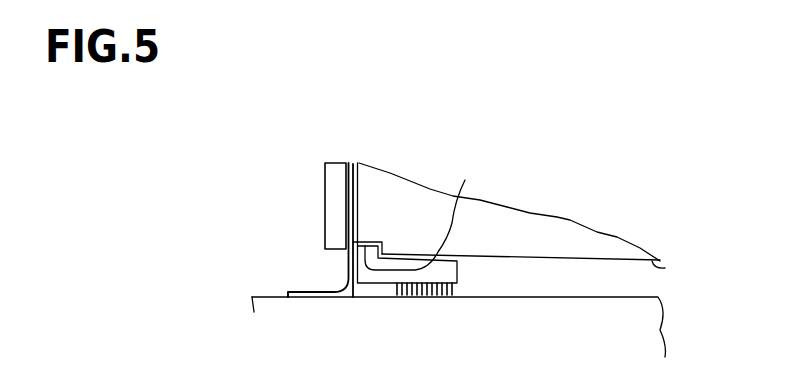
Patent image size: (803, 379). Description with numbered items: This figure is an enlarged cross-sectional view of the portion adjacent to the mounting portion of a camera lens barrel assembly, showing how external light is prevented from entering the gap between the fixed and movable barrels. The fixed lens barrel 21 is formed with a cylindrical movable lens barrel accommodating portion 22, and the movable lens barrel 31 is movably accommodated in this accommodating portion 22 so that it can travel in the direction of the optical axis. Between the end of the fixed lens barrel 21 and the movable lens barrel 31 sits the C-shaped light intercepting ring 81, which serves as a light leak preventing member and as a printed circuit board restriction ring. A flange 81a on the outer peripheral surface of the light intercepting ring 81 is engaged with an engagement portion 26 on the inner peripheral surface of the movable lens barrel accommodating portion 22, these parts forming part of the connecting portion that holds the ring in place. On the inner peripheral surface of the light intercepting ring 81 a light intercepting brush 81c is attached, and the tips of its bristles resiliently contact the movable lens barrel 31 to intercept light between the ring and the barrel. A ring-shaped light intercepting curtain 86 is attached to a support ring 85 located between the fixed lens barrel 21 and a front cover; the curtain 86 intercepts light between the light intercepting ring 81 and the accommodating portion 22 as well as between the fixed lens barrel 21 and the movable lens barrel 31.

The fixed lens barrel 21 is at (565, 226).
The movable lens barrel accommodating portion 22 is at (665, 268).
The engagement portion 26 is at (429, 209).
The movable lens barrel 31 is at (658, 297).
The light intercepting ring 81 is at (357, 297).
The flange 81a is at (375, 242).
The light intercepting brush 81c is at (410, 297).
The support ring 85 is at (332, 197).
The light intercepting curtain 86 is at (303, 292).